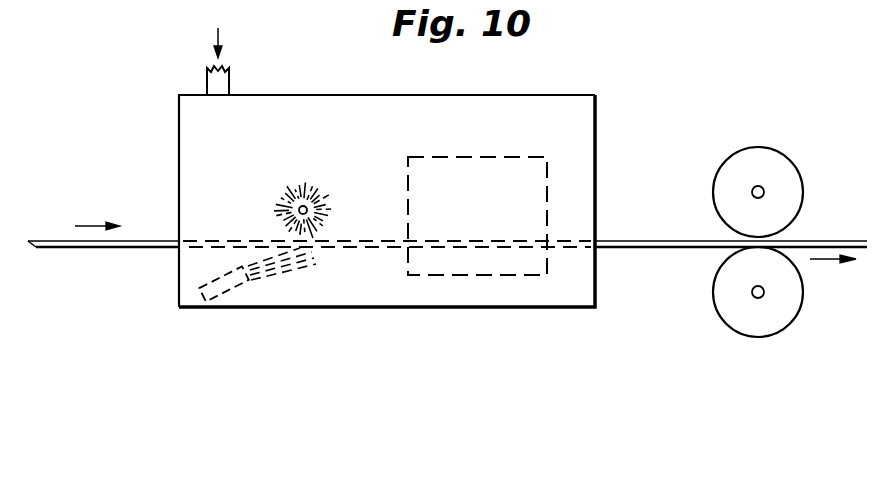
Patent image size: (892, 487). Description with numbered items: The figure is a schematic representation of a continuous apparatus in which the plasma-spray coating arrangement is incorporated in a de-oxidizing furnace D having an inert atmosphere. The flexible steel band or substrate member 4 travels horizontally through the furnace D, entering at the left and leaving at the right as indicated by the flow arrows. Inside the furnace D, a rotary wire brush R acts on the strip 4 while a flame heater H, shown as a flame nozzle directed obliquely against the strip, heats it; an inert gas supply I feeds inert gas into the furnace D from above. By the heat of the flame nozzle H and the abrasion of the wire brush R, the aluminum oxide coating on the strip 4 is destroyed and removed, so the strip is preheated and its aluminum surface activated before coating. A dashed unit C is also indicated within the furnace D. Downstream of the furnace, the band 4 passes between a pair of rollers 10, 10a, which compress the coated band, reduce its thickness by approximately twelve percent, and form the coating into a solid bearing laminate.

The de-oxidizing furnace D is at (253, 318).
The flexible steel band 4 is at (92, 246).
The inert gas supply I is at (207, 77).
The rotary wire brush R is at (310, 175).
The flame heater H is at (195, 292).
The cooling unit C is at (532, 152).
The roller 10 is at (785, 168).
The roller 10a is at (777, 318).